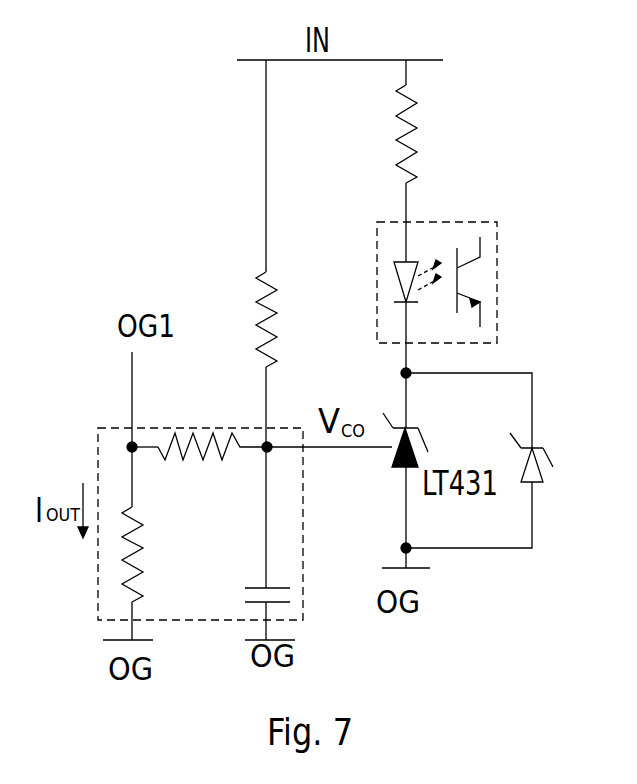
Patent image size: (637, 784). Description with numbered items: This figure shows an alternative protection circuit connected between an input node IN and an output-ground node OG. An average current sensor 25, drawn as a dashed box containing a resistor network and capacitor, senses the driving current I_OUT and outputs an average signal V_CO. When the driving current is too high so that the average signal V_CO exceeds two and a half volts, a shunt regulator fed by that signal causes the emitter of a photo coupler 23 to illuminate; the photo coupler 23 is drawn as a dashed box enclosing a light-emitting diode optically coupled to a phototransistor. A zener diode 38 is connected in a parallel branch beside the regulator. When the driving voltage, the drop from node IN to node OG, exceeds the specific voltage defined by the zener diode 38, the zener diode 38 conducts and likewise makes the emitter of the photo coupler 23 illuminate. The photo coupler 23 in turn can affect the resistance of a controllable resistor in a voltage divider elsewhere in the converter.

The photo coupler 23 is at (443, 222).
The average current sensor 25 is at (303, 472).
The zener diode 38 is at (540, 437).